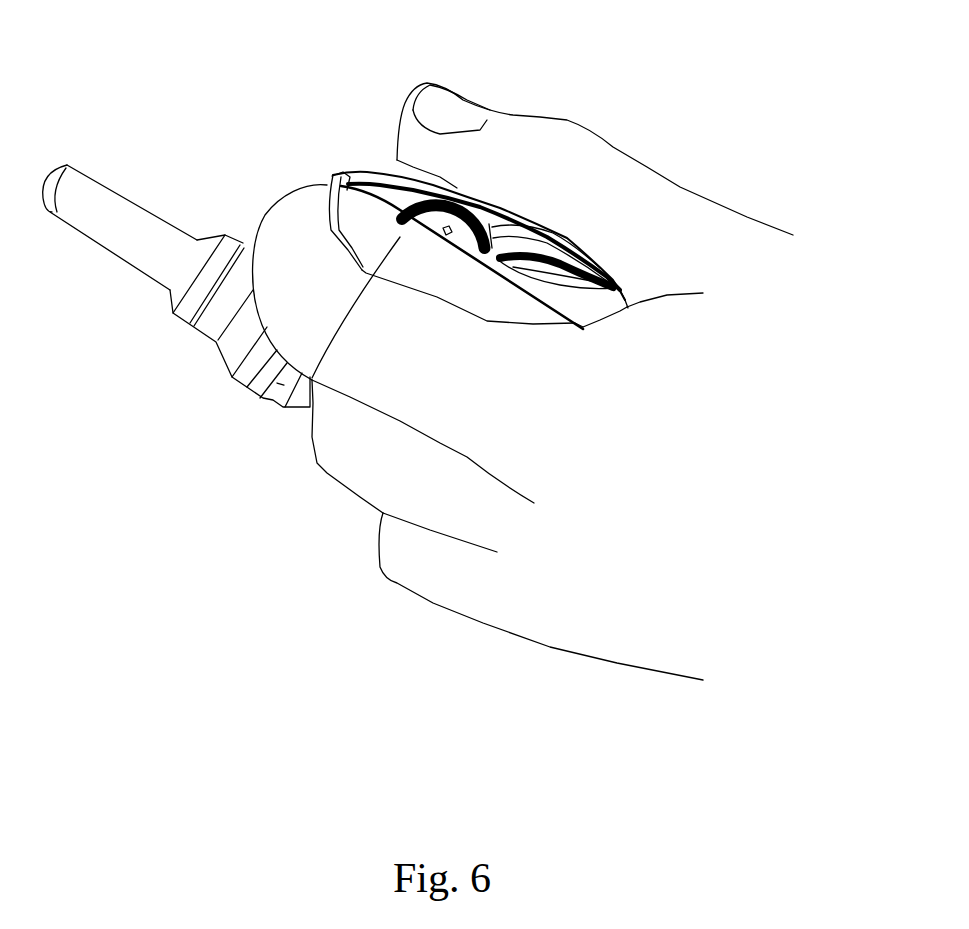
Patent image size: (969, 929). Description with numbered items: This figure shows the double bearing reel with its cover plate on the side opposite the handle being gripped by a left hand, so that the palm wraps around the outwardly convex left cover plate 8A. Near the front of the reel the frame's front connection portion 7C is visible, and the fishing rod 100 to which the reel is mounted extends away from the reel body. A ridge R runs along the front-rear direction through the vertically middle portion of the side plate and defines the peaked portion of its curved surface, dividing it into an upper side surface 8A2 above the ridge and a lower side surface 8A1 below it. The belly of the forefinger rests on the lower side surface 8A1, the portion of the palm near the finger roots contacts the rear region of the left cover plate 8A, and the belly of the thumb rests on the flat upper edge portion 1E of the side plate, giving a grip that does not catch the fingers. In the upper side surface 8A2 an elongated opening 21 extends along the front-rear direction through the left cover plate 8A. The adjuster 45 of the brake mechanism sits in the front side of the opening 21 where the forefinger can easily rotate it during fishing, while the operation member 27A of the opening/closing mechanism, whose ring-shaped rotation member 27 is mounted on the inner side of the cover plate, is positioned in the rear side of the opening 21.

The cable 100 is at (155, 262).
The front connection portion 7C is at (327, 185).
The upper edge portion 1E is at (396, 172).
The adjuster 45 is at (458, 198).
The rotation member 27 is at (546, 250).
The operation member 27A is at (614, 283).
The opening 21 is at (600, 254).
The upper side surface 8A2 is at (618, 295).
The ridge R is at (642, 294).
The left cover plate 8A is at (306, 391).
The lower side surface 8A1 is at (493, 303).